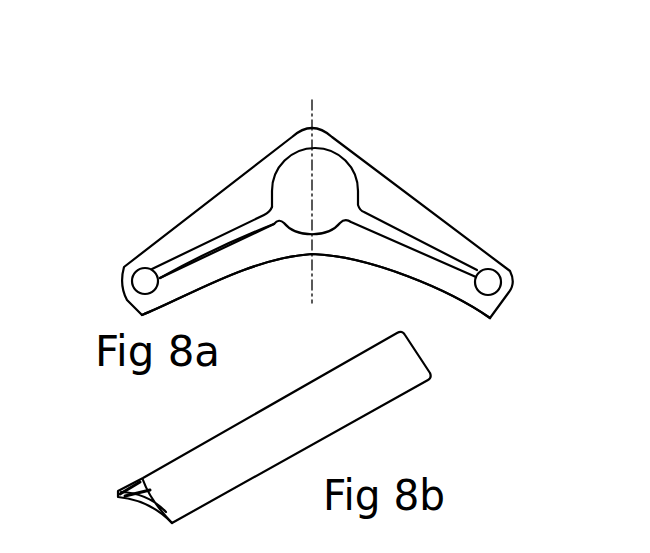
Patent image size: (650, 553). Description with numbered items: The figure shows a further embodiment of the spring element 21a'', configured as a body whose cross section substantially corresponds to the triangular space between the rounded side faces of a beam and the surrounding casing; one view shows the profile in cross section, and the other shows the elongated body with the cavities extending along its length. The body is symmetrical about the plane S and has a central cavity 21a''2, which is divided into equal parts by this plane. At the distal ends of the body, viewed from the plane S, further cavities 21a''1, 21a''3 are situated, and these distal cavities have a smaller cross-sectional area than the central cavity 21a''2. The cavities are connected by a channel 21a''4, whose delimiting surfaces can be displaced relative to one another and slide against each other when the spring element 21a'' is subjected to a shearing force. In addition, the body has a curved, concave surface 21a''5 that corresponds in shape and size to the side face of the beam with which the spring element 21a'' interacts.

In FIG. 8A, the spring element 21a'' is at (306, 195).
In FIG. 8B, the spring element 21a'' is at (326, 427).
In FIG. 8A, the distal cavity 21a''1 is at (99, 255).
In FIG. 8A, the central cavity 21a''2 is at (314, 193).
In FIG. 8A, the distal cavity 21a''3 is at (524, 259).
In FIG. 8A, the channel 21a''4 is at (180, 233).
In FIG. 8A, the curved surface 21a''5 is at (316, 295).
In FIG. 8A, the plane of symmetry S is at (308, 112).